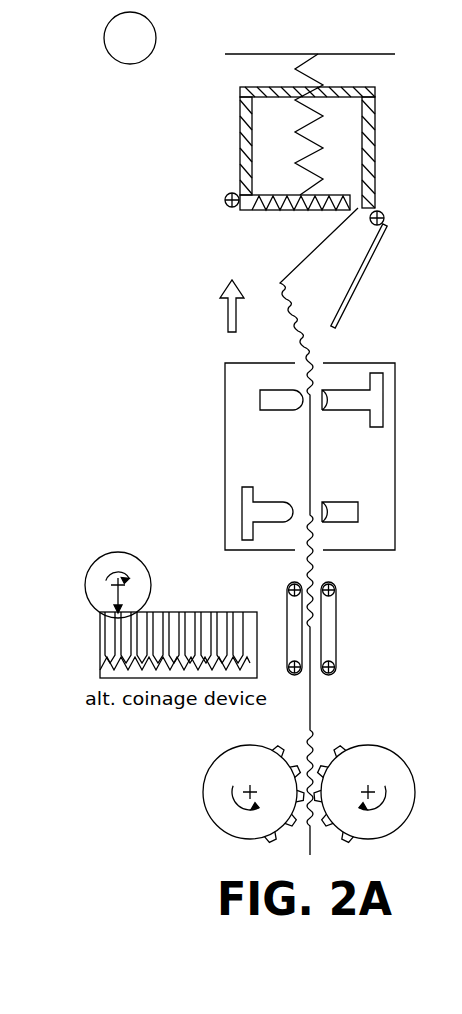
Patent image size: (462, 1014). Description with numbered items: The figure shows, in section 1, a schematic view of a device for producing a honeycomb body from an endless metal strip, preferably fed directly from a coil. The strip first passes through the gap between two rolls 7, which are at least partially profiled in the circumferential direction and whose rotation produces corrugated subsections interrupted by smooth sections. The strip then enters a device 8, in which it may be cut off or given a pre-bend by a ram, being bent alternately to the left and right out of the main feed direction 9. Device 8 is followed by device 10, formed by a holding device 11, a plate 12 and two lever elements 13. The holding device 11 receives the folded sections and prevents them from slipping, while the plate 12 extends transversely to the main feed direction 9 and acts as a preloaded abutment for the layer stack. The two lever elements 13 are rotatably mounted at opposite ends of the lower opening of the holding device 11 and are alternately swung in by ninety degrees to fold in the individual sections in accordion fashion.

The section 1 is at (130, 38).
The rolls 7 is at (218, 832).
The device 8 is at (206, 463).
The main feed direction 9 is at (228, 312).
The device 10 is at (245, 117).
The holding device 11 is at (240, 87).
The plate 12 is at (342, 185).
The lever elements 13 is at (232, 209).